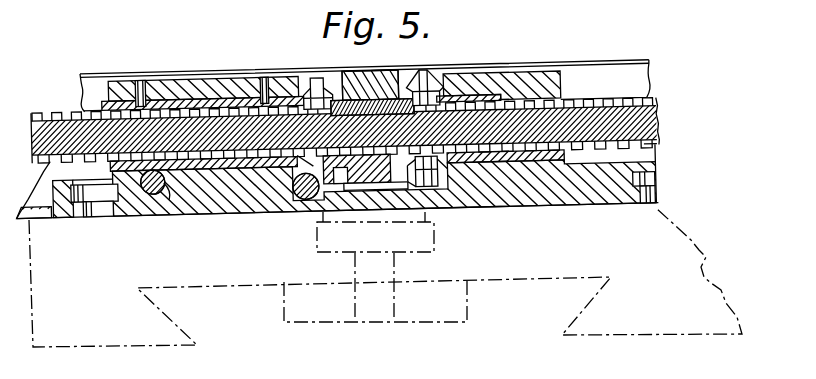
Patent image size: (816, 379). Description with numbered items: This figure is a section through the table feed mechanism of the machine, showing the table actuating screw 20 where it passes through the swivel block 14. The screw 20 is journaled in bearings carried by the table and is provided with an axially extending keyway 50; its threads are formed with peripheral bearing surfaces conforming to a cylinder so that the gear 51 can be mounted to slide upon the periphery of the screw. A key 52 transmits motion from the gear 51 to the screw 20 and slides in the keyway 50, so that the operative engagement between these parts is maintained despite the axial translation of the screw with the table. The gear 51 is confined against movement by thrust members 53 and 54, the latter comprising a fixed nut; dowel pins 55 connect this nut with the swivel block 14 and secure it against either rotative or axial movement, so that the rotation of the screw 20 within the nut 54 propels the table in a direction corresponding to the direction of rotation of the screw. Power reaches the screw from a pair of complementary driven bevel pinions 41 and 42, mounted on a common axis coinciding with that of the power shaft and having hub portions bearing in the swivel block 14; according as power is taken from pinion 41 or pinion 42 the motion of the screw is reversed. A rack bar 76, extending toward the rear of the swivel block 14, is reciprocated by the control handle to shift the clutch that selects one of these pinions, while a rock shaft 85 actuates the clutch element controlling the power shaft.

The swivel block 14 is at (230, 201).
The table actuating screw 20 is at (659, 136).
The driven pinion 41 is at (317, 88).
The driven pinion 42 is at (424, 84).
The keyway 50 is at (581, 105).
The gear 51 is at (385, 77).
The key 52 is at (362, 109).
The thrust member 53 is at (479, 99).
The thrust member (fixed nut) 54 is at (205, 102).
The dowel pins 55 is at (143, 74).
The rack bar 76 is at (304, 198).
The rock shaft 85 is at (170, 194).